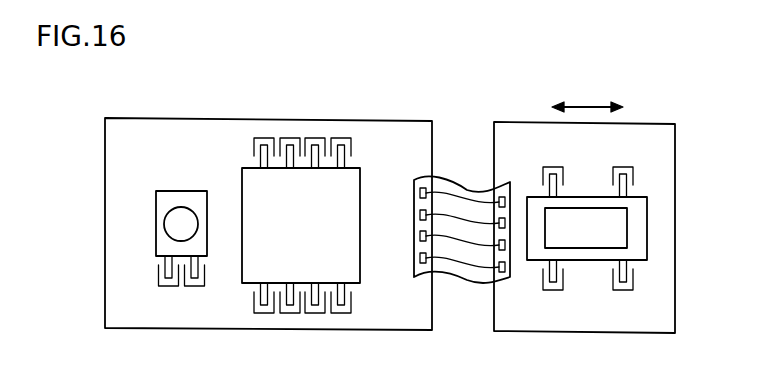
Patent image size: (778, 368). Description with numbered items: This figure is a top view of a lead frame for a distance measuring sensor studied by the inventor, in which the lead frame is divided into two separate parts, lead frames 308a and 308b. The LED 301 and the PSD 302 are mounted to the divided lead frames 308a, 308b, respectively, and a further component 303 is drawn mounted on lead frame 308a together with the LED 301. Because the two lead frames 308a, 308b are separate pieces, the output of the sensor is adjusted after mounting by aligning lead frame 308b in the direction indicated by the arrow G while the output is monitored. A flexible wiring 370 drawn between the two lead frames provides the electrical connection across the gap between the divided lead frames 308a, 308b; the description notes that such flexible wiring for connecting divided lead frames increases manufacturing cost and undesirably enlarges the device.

The lead frame 308a is at (131, 156).
The lead frame 308b is at (519, 141).
The LED 301 is at (182, 224).
The PSD 302 is at (603, 226).
The integrated circuit 303 is at (262, 190).
The flexible wiring board 370 is at (465, 190).
The arrow G is at (587, 98).